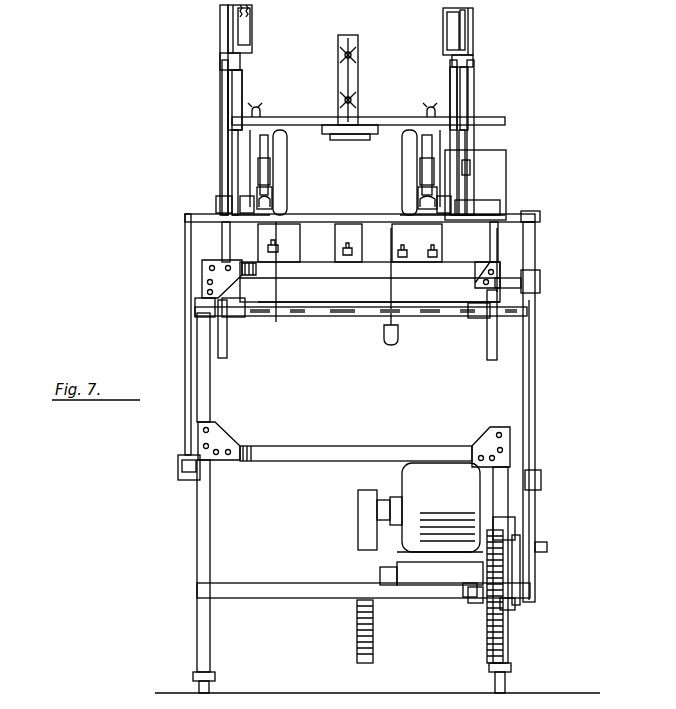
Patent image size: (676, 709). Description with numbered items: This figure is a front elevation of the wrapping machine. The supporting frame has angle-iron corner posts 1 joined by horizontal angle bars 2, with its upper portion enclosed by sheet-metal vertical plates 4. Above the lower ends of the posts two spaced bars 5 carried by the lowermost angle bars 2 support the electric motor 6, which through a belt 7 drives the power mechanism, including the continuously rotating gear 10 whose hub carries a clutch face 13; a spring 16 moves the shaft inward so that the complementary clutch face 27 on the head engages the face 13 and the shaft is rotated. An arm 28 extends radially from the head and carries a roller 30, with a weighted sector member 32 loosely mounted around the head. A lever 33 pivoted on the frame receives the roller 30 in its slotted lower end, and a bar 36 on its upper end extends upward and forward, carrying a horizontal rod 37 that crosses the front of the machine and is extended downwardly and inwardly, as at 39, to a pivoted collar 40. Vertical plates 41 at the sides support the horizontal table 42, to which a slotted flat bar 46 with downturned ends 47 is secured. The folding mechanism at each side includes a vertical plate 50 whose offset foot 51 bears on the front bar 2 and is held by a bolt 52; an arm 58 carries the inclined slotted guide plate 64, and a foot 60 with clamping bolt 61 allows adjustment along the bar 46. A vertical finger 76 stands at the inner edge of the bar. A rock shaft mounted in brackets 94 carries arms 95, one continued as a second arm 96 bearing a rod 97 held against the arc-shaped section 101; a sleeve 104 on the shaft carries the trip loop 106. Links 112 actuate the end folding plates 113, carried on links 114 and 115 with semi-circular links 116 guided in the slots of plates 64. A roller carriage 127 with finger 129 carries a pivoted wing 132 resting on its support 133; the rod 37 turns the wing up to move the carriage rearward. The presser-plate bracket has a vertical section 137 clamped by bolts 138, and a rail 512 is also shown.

The corner posts 1 is at (198, 527).
The horizontal angle bars 2 is at (300, 458).
The vertical plates 4 is at (282, 446).
The bars 5 is at (406, 590).
The electric motor 6 is at (425, 473).
The belt 7 is at (358, 556).
The gear 10 is at (488, 650).
The clutch face 13 is at (495, 600).
The spring 16 is at (466, 35).
The clutch face 27 is at (516, 601).
The arm 28 is at (521, 583).
The roller 30 is at (547, 547).
The weighted sector member 32 is at (512, 530).
The lever 33 is at (530, 466).
The bar 36 is at (536, 240).
The horizontal rod 37 is at (521, 218).
The downwardly and inwardly extended portion 39 is at (188, 330).
The collar 40 is at (186, 480).
The vertical plates 41 is at (222, 232).
The horizontal metal table 42 is at (490, 205).
The flat bar 46 is at (393, 118).
The downwardly turned vertical ends 47 is at (506, 160).
The vertical plate 50 is at (282, 246).
The laterally offset foot 51 is at (398, 264).
The bolt 52 is at (392, 247).
The arm 58 is at (226, 138).
The foot 60 is at (378, 134).
The clamping bolt 61 is at (429, 113).
The guide plate 64 is at (233, 97).
The vertical finger 76 is at (288, 152).
The brackets 94 is at (196, 310).
The arms 95 is at (228, 340).
The second arm 96 is at (496, 300).
The rod or crank 97 is at (500, 270).
The arc shaped section 101 is at (535, 358).
The sleeve 104 is at (338, 318).
The vertically extending loop 106 is at (394, 291).
The link 112 is at (242, 98).
The end folding plate 113 is at (253, 28).
The link 114 is at (227, 30).
The link 115 is at (226, 106).
The semi-circular link 116 is at (227, 53).
The roller carriage 127 is at (240, 190).
The finger 129 is at (268, 160).
The metal wing 132 is at (248, 148).
The support 133 is at (272, 195).
The vertical section 137 is at (356, 68).
The clamping bolts 138 is at (346, 99).
The rail 512 is at (304, 272).